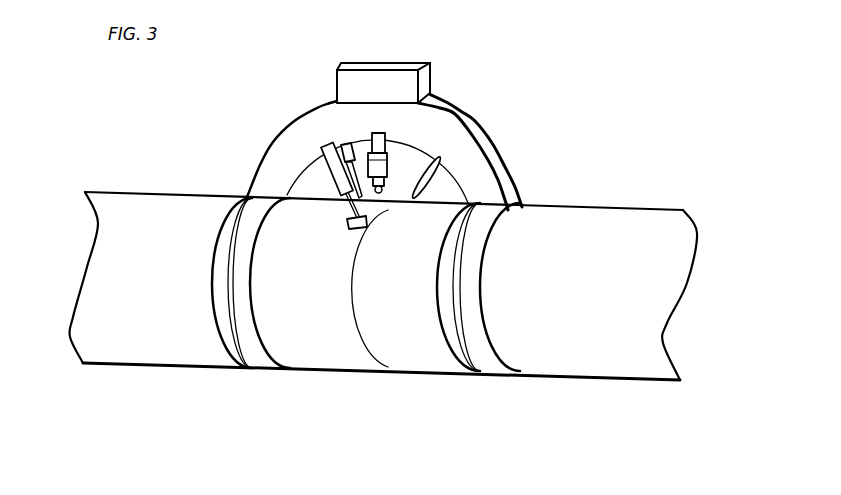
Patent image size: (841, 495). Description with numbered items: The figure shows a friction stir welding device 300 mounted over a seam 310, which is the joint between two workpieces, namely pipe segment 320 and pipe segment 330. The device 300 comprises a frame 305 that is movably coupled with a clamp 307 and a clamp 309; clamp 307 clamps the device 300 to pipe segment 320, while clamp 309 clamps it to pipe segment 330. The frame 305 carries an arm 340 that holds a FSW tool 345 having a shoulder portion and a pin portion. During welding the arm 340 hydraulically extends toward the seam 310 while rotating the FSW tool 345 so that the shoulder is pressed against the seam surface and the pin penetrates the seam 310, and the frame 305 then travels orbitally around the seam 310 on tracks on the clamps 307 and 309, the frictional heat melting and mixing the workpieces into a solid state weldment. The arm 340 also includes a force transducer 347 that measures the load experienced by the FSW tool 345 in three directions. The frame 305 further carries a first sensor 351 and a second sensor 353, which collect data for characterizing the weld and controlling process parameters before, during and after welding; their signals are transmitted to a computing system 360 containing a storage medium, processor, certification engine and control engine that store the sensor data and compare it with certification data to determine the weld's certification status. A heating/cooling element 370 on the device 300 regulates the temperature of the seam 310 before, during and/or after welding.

The FSW device 300 is at (405, 145).
The frame 305 is at (495, 150).
The clamp 307 is at (485, 362).
The clamp 309 is at (238, 362).
The seam 310 is at (354, 350).
The pipe segment 320 is at (632, 207).
The pipe segment 330 is at (148, 192).
The arm 340 is at (355, 243).
The FSW tool 345 is at (383, 187).
The force transducer 347 is at (384, 162).
The first sensor 351 is at (420, 181).
The second sensor 353 is at (343, 148).
The computing system 360 is at (390, 64).
The heating/cooling element 370 is at (322, 170).